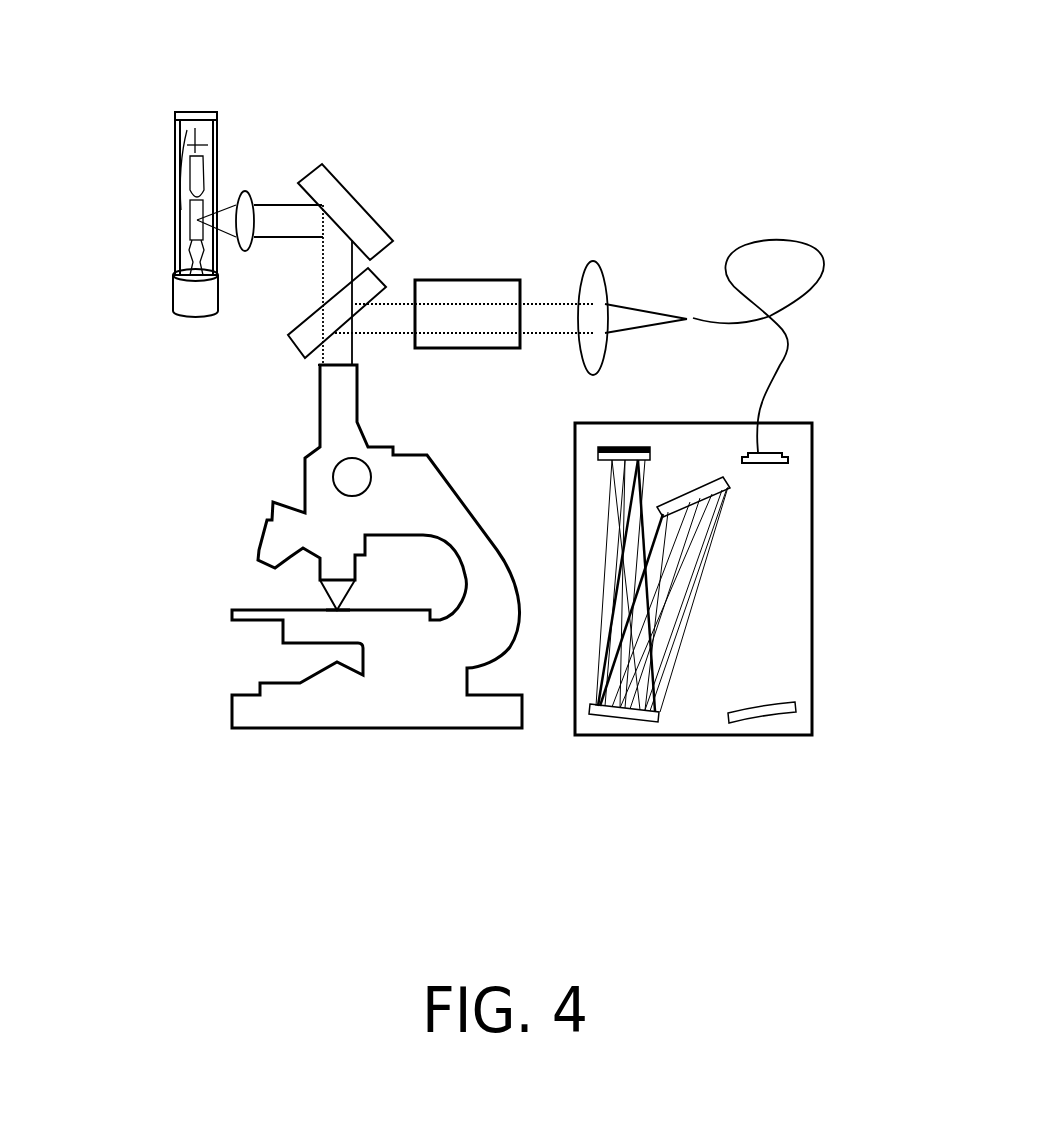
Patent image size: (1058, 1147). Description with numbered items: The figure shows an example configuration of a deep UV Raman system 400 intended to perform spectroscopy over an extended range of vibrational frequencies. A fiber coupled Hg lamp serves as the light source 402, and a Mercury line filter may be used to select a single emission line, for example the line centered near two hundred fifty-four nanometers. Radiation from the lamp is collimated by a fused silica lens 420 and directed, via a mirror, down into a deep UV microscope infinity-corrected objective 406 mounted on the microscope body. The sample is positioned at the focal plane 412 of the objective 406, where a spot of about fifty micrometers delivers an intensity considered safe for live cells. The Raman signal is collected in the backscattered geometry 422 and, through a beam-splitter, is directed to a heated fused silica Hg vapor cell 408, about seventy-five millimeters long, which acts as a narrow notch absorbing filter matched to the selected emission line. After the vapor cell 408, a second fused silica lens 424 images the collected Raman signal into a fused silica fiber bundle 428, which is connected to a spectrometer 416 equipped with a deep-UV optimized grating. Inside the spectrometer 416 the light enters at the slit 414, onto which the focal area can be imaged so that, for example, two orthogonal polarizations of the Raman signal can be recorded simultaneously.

The deep UV Raman system 400 is at (99, 44).
The light source 402 is at (148, 277).
The deep UV microscope infinity-corrected objective 406 is at (285, 588).
The Hg vapor cell 408 is at (490, 268).
The focal plane 412 is at (325, 603).
The slit 414 is at (787, 472).
The spectrometer 416 is at (812, 602).
The fused silica lens 420 is at (265, 185).
The backscattered geometry 422 is at (400, 265).
The fused silica lens 424 is at (615, 265).
The fused silica fiber bundle 428 is at (835, 280).